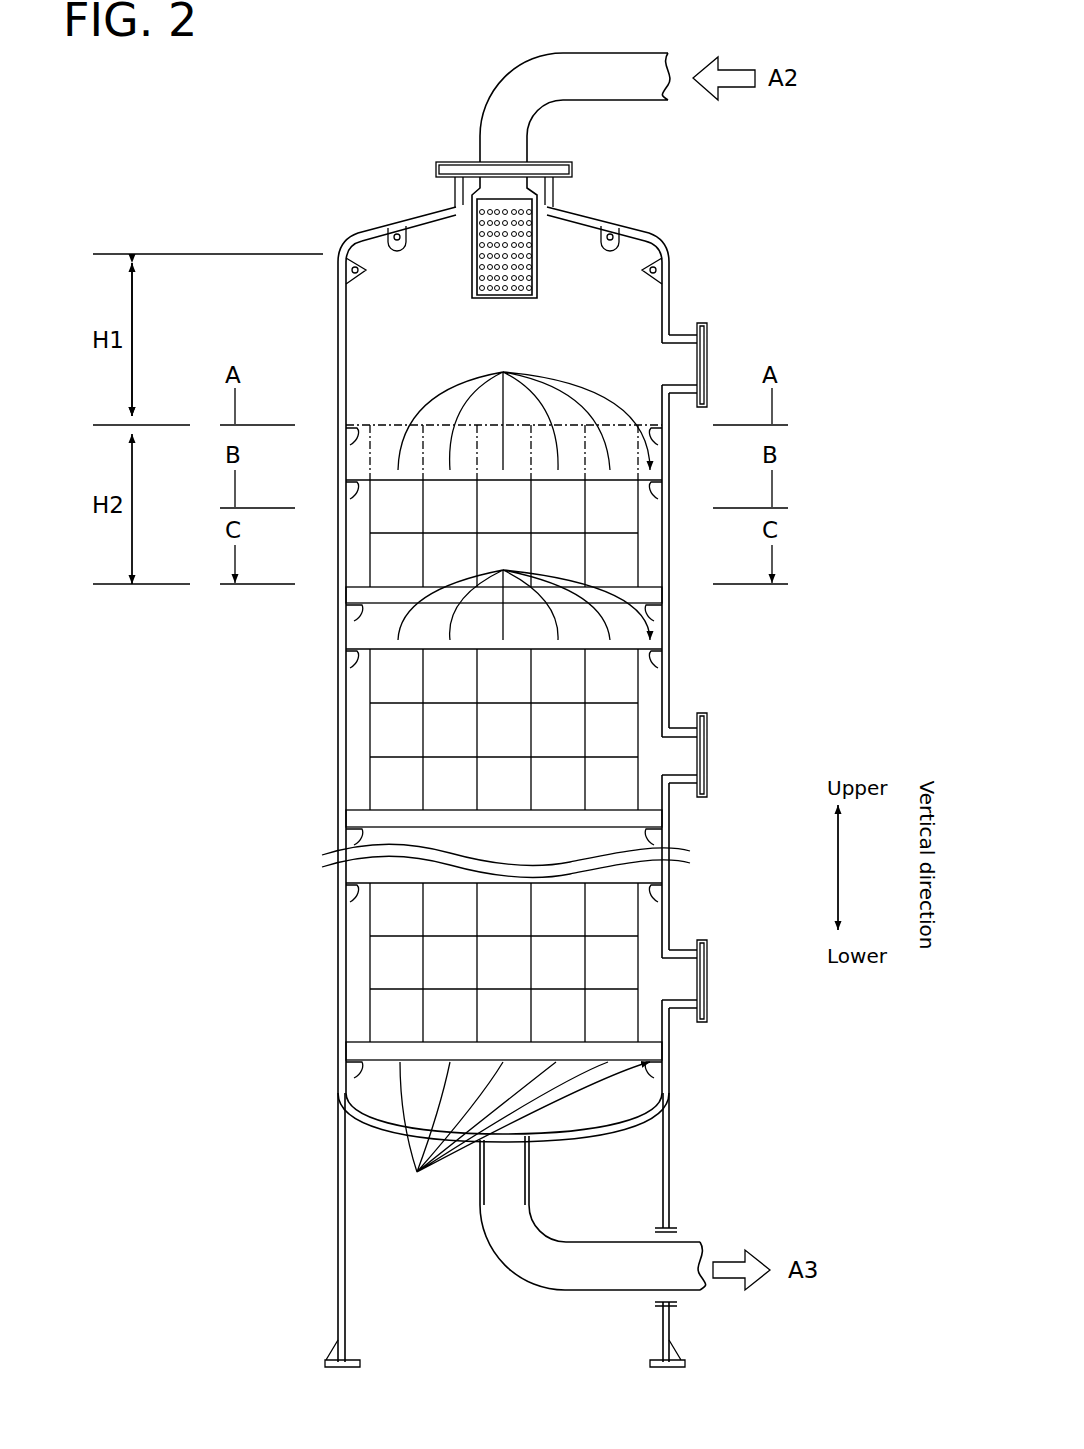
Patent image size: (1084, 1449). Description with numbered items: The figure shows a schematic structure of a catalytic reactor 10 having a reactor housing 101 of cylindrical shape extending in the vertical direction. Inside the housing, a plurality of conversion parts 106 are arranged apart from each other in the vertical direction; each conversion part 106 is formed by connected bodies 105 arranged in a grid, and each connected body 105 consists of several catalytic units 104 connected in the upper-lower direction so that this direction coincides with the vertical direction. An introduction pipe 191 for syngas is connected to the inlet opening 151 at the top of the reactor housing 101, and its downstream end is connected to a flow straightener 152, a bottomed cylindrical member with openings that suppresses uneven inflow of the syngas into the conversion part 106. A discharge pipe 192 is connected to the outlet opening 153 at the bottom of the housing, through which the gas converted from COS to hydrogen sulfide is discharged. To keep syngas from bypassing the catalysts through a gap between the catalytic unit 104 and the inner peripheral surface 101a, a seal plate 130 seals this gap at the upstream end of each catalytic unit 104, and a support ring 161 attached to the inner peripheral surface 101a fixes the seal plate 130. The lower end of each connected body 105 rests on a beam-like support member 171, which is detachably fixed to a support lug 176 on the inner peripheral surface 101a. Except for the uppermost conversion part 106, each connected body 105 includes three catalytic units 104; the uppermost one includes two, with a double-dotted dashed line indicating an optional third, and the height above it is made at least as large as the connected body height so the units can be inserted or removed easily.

The catalytic reactor 10 is at (722, 231).
The reactor housing 101 is at (670, 286).
The inner peripheral surface 101a is at (347, 334).
The catalytic unit 104 is at (627, 516).
The connected body 105 is at (522, 776).
The conversion part 106 is at (354, 549).
The seal plate 130 is at (652, 474).
The gas inlet (inlet opening) 151 is at (530, 176).
The flow straightener 152 is at (538, 230).
The gas outlet (outlet opening) 153 is at (507, 1138).
The support ring 161 is at (346, 493).
The support member 171 is at (352, 595).
The support lug 176 is at (353, 612).
The introduction pipe 191 is at (563, 53).
The discharge pipe 192 is at (540, 1292).